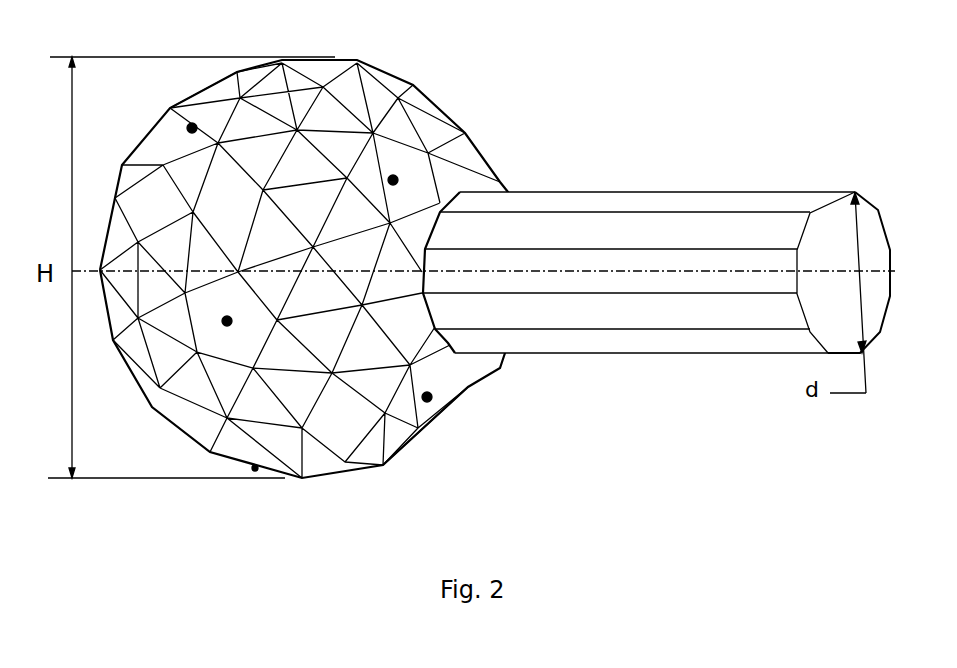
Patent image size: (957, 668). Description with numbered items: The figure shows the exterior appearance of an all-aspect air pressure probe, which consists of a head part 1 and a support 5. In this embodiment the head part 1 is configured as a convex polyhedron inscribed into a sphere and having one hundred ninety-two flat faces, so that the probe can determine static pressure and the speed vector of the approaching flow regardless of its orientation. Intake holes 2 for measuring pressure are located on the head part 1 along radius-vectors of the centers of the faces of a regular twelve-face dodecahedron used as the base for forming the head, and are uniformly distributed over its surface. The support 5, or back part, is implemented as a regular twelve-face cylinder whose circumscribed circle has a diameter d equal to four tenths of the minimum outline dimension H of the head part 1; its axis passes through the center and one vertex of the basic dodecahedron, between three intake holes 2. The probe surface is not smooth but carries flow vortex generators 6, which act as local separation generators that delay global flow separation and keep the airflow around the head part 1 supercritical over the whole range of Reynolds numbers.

The head part 1 is at (362, 80).
The intake holes 2 is at (227, 321).
The support 5 is at (605, 205).
The flow vortex generators 6 is at (160, 388).